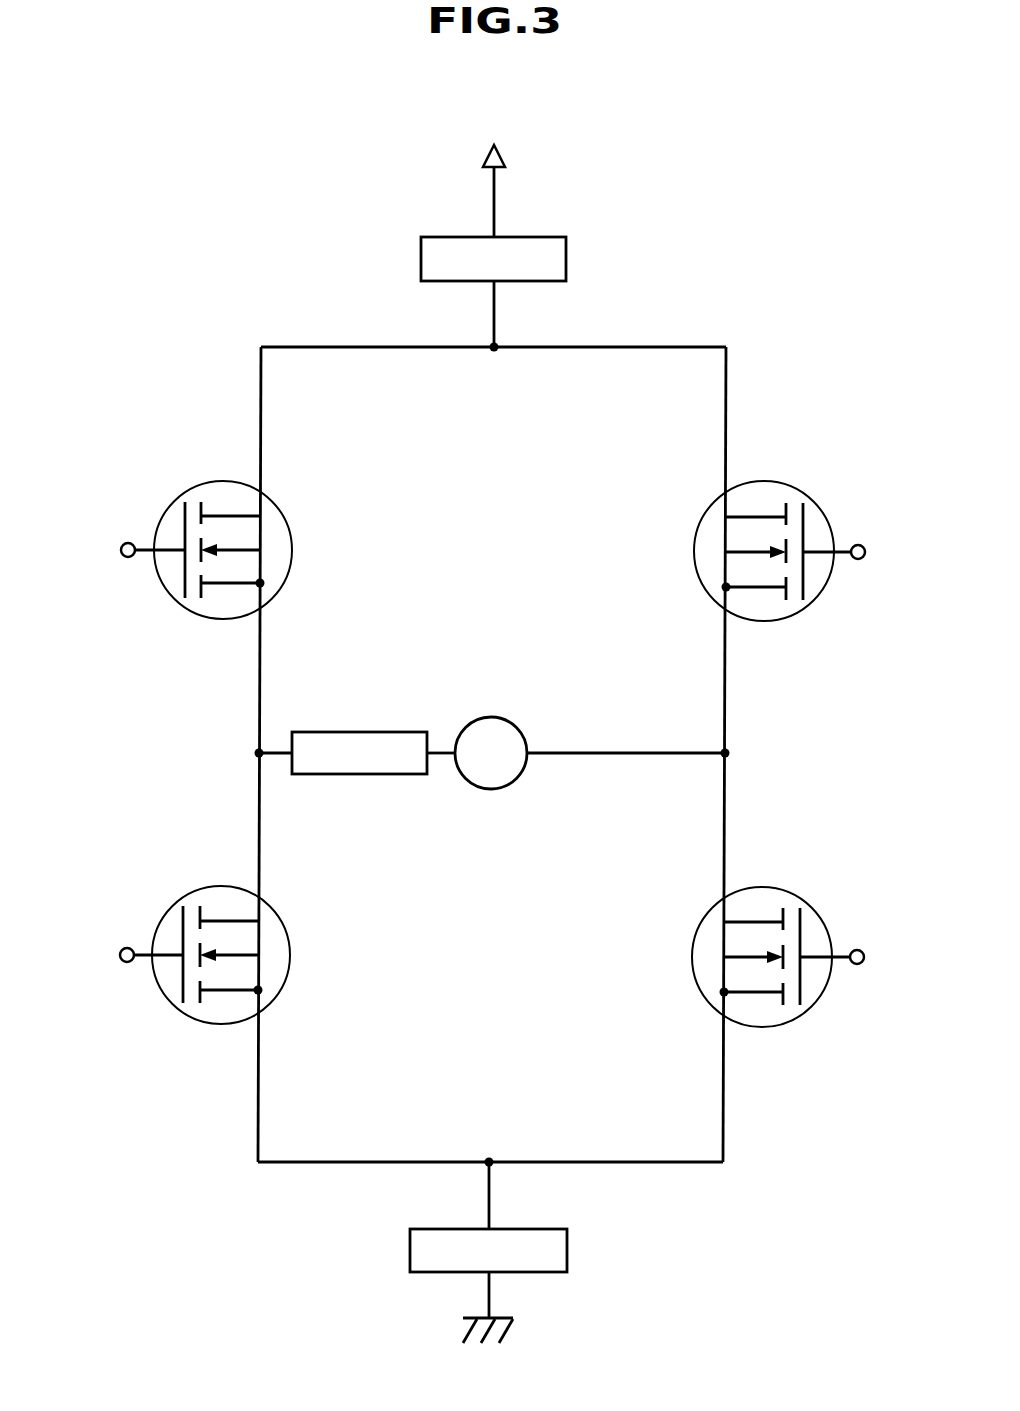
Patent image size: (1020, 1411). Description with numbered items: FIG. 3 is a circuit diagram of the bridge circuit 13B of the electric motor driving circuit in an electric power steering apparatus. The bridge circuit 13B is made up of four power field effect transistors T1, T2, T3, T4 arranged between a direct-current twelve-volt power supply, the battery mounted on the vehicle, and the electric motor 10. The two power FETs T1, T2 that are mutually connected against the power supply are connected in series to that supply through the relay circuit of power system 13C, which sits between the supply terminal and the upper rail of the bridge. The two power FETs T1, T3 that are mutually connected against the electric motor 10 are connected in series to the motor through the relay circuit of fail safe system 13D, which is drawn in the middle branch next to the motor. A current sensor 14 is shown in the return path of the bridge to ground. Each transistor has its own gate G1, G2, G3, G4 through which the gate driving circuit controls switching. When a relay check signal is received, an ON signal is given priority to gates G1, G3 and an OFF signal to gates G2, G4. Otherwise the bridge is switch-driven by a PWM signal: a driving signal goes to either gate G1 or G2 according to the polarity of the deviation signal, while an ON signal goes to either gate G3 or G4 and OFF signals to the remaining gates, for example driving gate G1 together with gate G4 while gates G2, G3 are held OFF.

The bridge circuit 13B is at (600, 317).
The relay circuit of power system 13C is at (421, 262).
The relay circuit of fail safe system 13D is at (357, 732).
The electric motor 10 is at (463, 775).
The current sensor 14 is at (567, 1243).
The power FET T1 is at (208, 480).
The power FET T2 is at (780, 480).
The power FET T3 is at (205, 1025).
The power FET T4 is at (775, 1027).
The gate G1 is at (146, 528).
The gate G2 is at (841, 532).
The gate G3 is at (145, 973).
The gate G4 is at (839, 976).